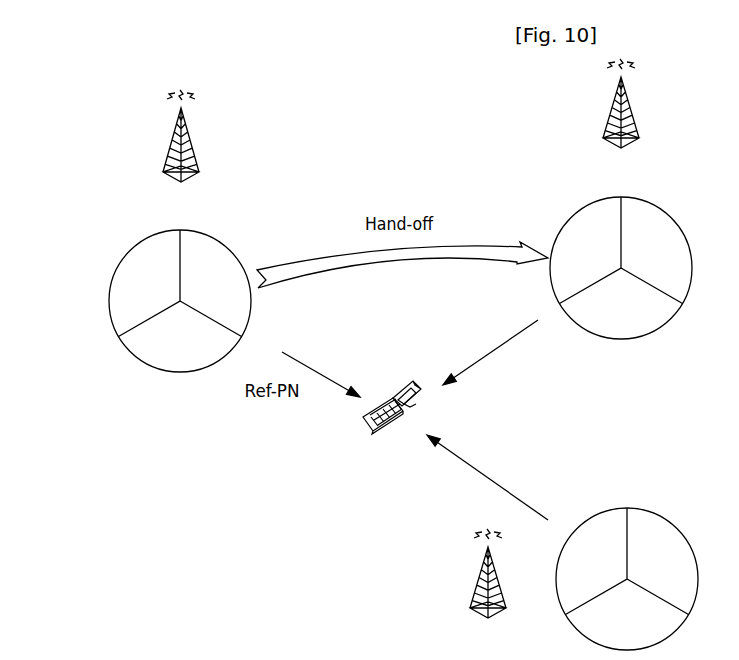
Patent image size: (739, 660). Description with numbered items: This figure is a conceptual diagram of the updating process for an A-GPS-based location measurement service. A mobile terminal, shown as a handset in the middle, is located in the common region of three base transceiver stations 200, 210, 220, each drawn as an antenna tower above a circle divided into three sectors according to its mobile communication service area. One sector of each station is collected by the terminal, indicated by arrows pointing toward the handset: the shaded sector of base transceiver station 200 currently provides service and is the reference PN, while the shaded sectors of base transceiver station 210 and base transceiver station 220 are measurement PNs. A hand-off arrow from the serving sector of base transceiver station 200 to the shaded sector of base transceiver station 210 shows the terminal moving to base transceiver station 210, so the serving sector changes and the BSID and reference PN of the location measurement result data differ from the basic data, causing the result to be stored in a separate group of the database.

The base transceiver station 200 is at (180, 231).
The base transceiver station 210 is at (621, 199).
The base transceiver station 220 is at (574, 579).